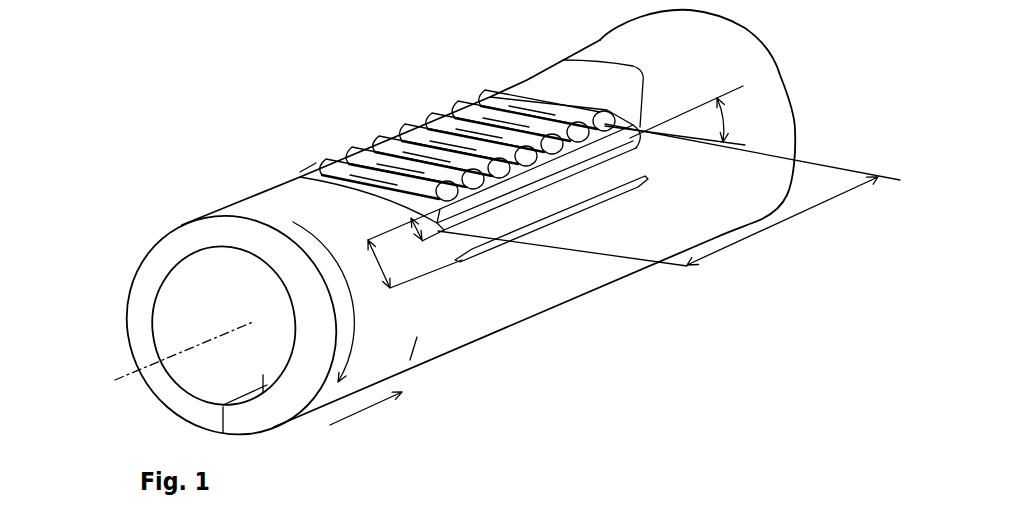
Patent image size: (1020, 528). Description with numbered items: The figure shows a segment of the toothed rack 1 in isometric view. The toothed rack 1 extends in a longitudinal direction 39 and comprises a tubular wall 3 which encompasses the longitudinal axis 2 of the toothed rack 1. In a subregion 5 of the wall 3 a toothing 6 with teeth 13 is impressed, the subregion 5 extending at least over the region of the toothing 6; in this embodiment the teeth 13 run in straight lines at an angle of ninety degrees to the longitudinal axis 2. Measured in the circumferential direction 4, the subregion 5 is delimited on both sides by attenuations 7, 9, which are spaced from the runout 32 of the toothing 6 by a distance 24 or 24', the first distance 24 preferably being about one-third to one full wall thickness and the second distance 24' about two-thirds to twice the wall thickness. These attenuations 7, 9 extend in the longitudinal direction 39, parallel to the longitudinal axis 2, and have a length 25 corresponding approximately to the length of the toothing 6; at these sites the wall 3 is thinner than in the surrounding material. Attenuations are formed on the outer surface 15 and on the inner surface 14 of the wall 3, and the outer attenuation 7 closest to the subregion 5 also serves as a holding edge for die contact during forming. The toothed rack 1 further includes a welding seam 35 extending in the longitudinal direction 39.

The toothed rack 1 is at (146, 76).
The longitudinal axis 2 is at (120, 372).
The wall 3 is at (287, 397).
The circumferential direction 4 is at (331, 302).
The subregion 5 is at (427, 84).
The toothing 6 is at (495, 124).
The attenuation 7 is at (569, 166).
The attenuation 9 is at (485, 255).
The teeth 13 is at (520, 99).
The inner surface 14 is at (259, 384).
The outer surface 15 is at (410, 360).
The distance 24 is at (413, 232).
The distance 24' is at (404, 264).
The length 25 is at (669, 195).
The runout 32 is at (305, 173).
The welding seam 35 is at (237, 397).
The longitudinal direction 39 is at (366, 416).